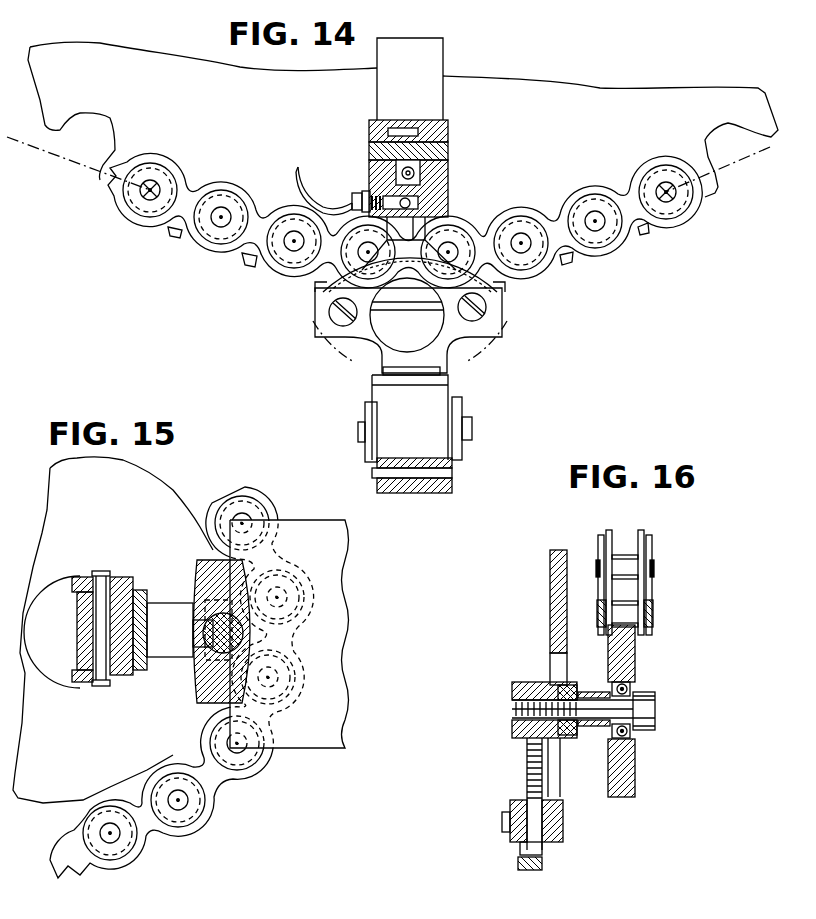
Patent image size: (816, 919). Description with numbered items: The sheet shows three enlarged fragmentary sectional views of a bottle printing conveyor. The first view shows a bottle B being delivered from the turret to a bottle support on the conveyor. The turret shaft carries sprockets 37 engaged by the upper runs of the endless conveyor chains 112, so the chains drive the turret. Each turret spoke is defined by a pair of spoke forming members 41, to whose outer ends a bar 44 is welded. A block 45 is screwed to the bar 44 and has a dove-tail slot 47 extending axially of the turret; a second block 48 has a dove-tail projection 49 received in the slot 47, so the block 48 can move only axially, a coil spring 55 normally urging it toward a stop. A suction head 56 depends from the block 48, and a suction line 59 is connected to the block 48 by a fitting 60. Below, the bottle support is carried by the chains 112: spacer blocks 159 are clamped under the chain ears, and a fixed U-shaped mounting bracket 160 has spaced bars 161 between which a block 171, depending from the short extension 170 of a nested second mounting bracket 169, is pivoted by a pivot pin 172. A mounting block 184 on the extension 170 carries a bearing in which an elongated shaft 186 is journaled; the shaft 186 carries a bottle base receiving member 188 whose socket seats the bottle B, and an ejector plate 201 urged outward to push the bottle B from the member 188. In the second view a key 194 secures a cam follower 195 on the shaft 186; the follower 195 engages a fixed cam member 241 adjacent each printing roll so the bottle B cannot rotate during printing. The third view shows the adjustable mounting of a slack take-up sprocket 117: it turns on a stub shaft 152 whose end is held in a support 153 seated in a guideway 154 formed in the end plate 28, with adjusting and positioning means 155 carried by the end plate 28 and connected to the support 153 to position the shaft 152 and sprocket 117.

In FIG. 14, the sprocket 37 is at (616, 100).
In FIG. 14, the spoke forming member 41 is at (428, 63).
In FIG. 14, the bar 44 is at (448, 125).
In FIG. 14, the block 45 is at (448, 150).
In FIG. 14, the dove-tail slot 47 is at (452, 170).
In FIG. 14, the second block 48 is at (445, 200).
In FIG. 14, the dove-tail projection 49 is at (370, 165).
In FIG. 14, the coil spring 55 is at (448, 180).
In FIG. 14, the suction head 56 is at (437, 224).
In FIG. 14, the suction line 59 is at (300, 165).
In FIG. 14, the fitting 60 is at (352, 192).
In FIG. 14, the conveyor chain 112 is at (665, 226).
In FIG. 15, the conveyor chain 112 is at (150, 846).
In FIG. 16, the conveyor chain 112 is at (652, 555).
In FIG. 14, the mounting bracket 160 is at (440, 493).
In FIG. 14, the bar 161 is at (462, 455).
In FIG. 15, the bar 161 is at (125, 580).
In FIG. 14, the second mounting bracket 169 is at (377, 466).
In FIG. 14, the pivot pin 172 is at (472, 427).
In FIG. 15, the pivot pin 172 is at (98, 572).
In FIG. 14, the mounting block 184 is at (440, 375).
In FIG. 14, the bottle base receiving member 188 is at (357, 337).
In FIG. 14, the enlarged plate 201 is at (392, 333).
In FIG. 14, the bottle B is at (466, 362).
In FIG. 15, the short extension 170 is at (147, 596).
In FIG. 15, the block 171 is at (78, 638).
In FIG. 15, the elongated shaft 186 is at (257, 637).
In FIG. 15, the key 194 is at (193, 630).
In FIG. 15, the cam follower 195 is at (197, 693).
In FIG. 15, the spacer block 159 is at (158, 668).
In FIG. 15, the cam member 241 is at (330, 697).
In FIG. 16, the end plate 28 is at (550, 572).
In FIG. 16, the slack take-up sprocket 117 is at (630, 657).
In FIG. 16, the stub shaft 152 is at (657, 713).
In FIG. 16, the support 153 is at (530, 683).
In FIG. 16, the guideway 154 is at (557, 777).
In FIG. 16, the adjusting and positioning means 155 is at (510, 833).